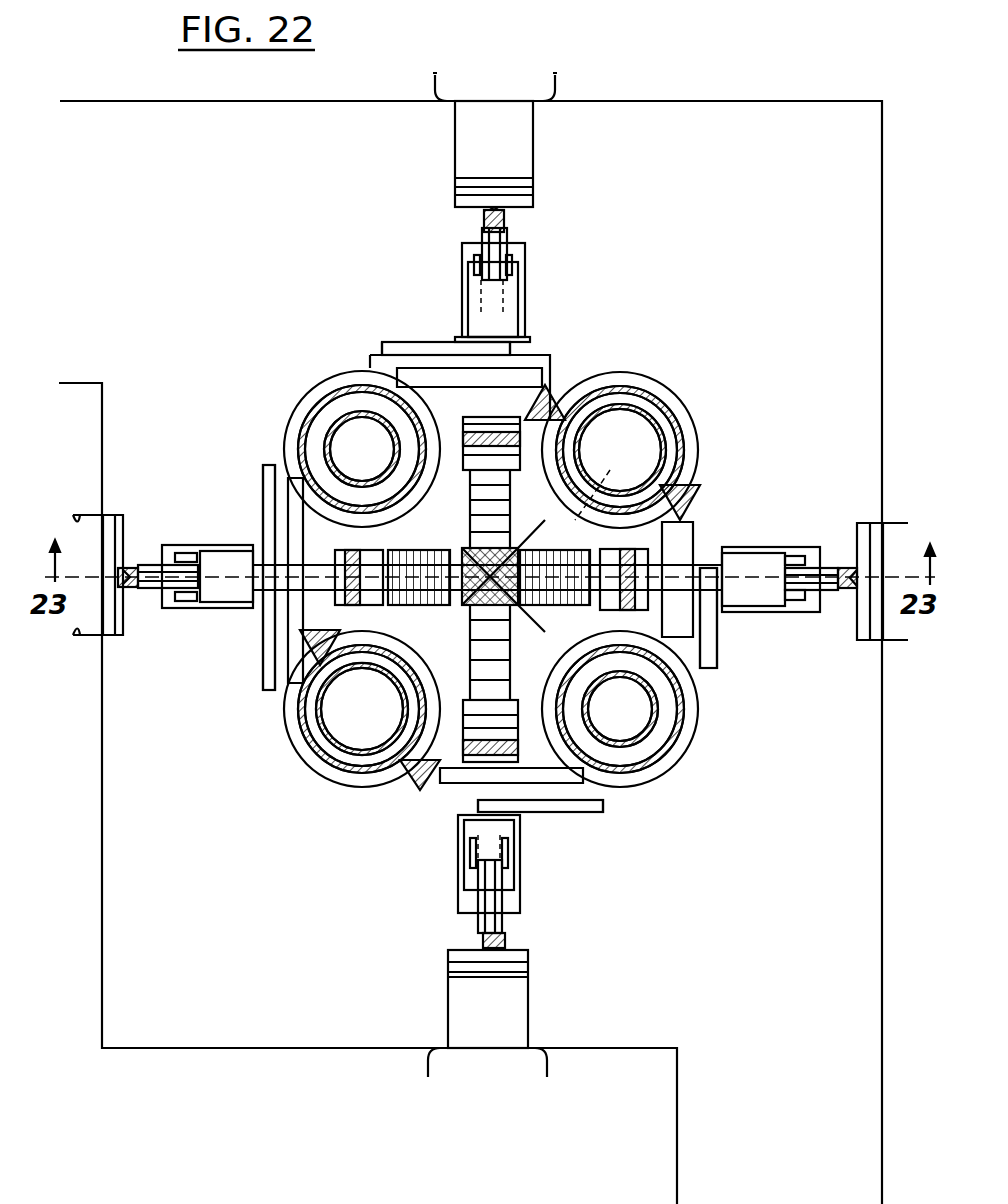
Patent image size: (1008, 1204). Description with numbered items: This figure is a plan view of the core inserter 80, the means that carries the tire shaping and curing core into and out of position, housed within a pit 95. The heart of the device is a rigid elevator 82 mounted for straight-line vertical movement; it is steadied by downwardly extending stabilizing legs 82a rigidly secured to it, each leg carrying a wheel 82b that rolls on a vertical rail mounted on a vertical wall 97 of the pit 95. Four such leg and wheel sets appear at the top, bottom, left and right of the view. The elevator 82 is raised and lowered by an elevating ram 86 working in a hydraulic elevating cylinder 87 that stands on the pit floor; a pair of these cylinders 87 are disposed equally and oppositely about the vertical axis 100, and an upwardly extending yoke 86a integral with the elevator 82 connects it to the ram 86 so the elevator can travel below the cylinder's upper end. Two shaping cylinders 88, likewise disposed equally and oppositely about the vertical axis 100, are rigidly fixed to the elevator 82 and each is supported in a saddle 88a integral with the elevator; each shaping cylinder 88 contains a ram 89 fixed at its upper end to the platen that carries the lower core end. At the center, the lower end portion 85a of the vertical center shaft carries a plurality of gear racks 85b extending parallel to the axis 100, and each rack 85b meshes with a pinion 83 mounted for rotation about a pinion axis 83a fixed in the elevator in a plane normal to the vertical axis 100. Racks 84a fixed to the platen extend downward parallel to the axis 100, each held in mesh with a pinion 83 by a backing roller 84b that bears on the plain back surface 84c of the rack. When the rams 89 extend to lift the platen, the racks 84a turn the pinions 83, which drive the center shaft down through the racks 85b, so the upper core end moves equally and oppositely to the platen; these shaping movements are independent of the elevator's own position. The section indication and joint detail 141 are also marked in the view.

The core inserter 80 is at (680, 338).
The rigid elevator 82 is at (757, 543).
The stabilizing legs 82a is at (465, 250).
The wheel 82b is at (482, 238).
The pinion 83 is at (565, 478).
The pinion axis 83a is at (295, 691).
The rack 84a is at (422, 457).
The backing roller 84b is at (497, 430).
The plain back surface 84c is at (478, 420).
The lower end portion of center shaft 85a is at (460, 656).
The gear racks 85b is at (454, 550).
The elevating ram 86 is at (605, 407).
The yoke 86a is at (680, 507).
The elevating cylinder 87 is at (668, 434).
The shaping cylinder 88 is at (300, 437).
The saddle 88a is at (425, 345).
The ram 89 is at (330, 437).
The pit 95 is at (276, 323).
The vertical wall 97 is at (318, 102).
The vertical axis 100 is at (545, 569).
The universal joint 141 is at (502, 222).